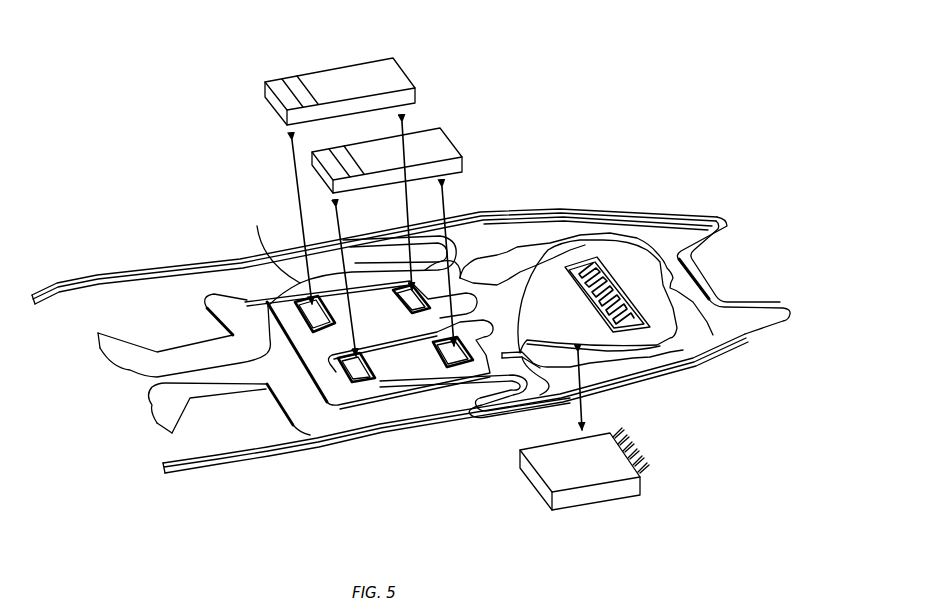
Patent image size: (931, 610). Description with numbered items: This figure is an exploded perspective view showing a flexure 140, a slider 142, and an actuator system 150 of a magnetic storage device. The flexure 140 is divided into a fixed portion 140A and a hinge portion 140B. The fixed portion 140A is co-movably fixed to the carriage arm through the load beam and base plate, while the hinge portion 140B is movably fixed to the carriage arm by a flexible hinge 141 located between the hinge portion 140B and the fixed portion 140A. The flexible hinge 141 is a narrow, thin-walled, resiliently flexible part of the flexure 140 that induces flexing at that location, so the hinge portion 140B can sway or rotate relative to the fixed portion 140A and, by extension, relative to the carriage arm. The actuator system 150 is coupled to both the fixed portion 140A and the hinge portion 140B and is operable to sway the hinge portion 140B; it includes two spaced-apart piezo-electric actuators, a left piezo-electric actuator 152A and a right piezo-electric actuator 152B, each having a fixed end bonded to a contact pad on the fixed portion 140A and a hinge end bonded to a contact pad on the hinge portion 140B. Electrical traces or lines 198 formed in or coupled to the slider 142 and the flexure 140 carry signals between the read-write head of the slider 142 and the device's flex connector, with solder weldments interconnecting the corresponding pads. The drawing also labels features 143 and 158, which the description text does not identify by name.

The flexure 140 is at (128, 262).
The fixed portion 140A is at (373, 335).
The hinge portion 140B is at (542, 295).
The flexible hinge 141 is at (460, 383).
The slider 142 is at (590, 500).
The rail of lead frame 143 is at (495, 215).
The actuator system 150 is at (389, 274).
The left piezo-electric actuator 152A is at (341, 60).
The right piezo-electric actuator 152B is at (436, 126).
The bonding pads 158 is at (428, 290).
The electrical traces or lines 198 is at (222, 293).